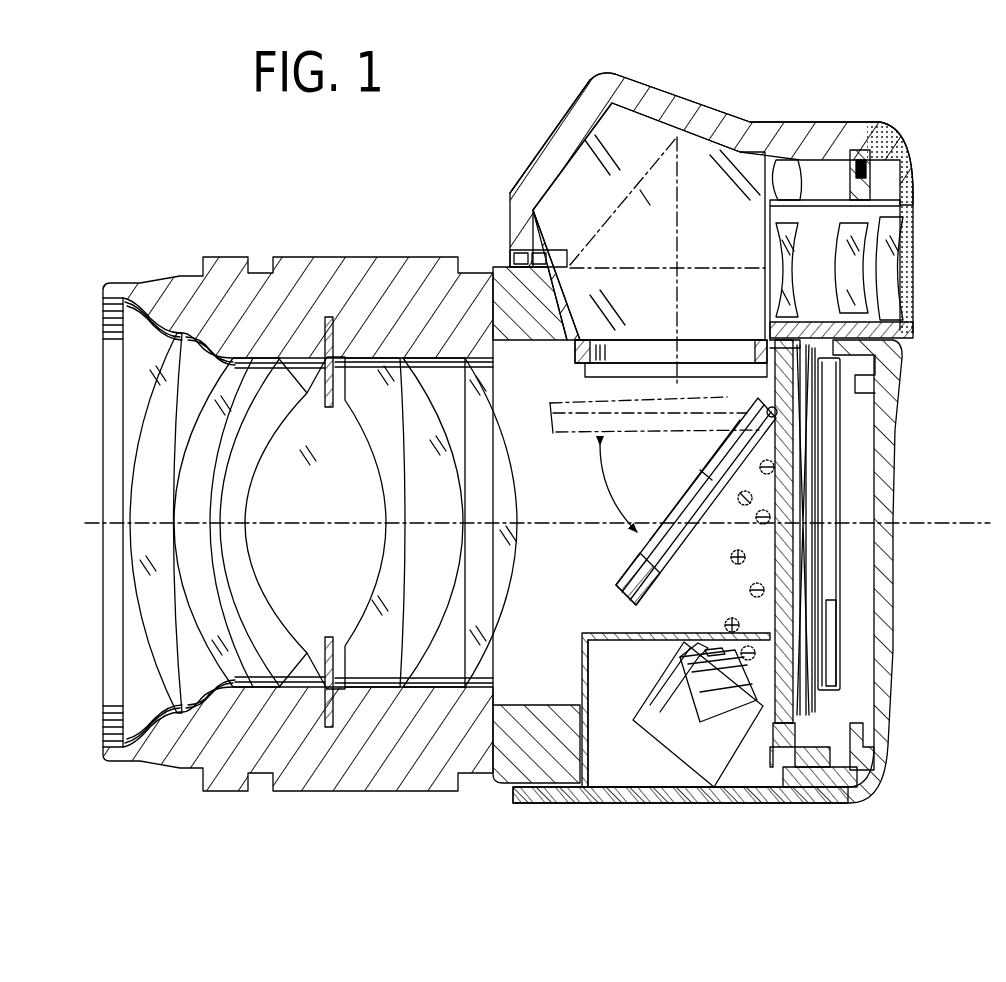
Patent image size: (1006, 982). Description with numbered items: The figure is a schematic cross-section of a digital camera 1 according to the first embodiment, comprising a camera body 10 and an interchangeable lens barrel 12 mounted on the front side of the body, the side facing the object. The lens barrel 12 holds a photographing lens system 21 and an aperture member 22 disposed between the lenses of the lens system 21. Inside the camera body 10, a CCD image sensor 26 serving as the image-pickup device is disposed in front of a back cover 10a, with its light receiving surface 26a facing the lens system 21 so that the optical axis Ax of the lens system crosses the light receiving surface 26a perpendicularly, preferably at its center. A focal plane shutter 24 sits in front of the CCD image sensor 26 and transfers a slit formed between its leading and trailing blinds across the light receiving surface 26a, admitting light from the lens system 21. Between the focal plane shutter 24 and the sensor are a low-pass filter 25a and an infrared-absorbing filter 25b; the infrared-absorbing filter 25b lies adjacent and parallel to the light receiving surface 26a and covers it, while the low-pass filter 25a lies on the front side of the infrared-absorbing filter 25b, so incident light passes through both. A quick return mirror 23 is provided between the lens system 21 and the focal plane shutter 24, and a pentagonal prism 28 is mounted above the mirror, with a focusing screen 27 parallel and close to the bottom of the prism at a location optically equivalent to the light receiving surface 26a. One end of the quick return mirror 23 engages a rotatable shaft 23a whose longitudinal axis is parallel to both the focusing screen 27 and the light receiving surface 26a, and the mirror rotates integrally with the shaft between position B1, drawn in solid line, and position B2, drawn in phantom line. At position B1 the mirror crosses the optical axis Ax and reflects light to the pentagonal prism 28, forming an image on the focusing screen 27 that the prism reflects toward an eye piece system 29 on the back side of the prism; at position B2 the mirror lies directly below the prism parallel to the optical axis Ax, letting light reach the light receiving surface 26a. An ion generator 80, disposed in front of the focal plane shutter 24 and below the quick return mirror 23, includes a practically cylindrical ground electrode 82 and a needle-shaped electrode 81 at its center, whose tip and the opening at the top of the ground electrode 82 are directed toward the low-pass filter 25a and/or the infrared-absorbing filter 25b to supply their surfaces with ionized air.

The digital camera 1 is at (528, 106).
The camera body 10 is at (724, 561).
The back cover 10a is at (882, 716).
The interchangeable lens barrel 12 is at (360, 258).
The photographing lens system 21 is at (523, 535).
The aperture member 22 is at (330, 414).
The quick return mirror 23 is at (688, 488).
The shaft 23a is at (768, 405).
The focal plane shutter 24 is at (775, 568).
The low-pass filter 25a is at (800, 495).
The infrared-absorbing filter 25b is at (802, 549).
The CCD image sensor 26 is at (840, 448).
The light receiving surface 26a is at (830, 602).
The focusing screen 27 is at (668, 372).
The pentagonal prism 28 is at (675, 130).
The eye piece system 29 is at (917, 241).
The ion generator 80 is at (667, 740).
The needle-shaped electrode 81 is at (717, 683).
The ground electrode 82 is at (687, 653).
The position B1 is at (637, 572).
The position B2 is at (580, 437).
The optical axis Ax is at (967, 523).